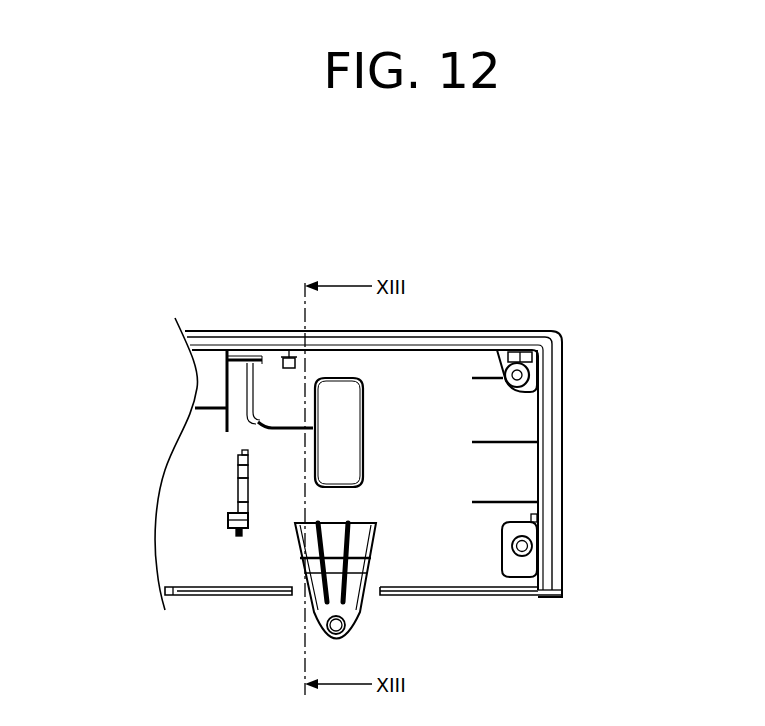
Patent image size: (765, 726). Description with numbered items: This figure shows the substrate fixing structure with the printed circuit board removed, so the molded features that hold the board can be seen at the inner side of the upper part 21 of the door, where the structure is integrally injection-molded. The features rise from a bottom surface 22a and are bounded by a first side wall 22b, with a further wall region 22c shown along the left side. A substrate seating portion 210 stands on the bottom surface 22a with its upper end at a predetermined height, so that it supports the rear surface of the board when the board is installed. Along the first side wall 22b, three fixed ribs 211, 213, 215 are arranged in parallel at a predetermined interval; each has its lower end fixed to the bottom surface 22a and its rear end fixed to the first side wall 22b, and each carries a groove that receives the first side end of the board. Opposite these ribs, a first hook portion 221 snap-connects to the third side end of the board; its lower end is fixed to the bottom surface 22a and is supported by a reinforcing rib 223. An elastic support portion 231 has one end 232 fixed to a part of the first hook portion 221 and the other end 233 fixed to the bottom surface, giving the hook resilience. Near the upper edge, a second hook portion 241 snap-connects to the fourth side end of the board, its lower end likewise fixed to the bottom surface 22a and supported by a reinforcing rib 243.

The upper part 21 is at (562, 357).
The bottom surface 22a is at (458, 557).
The first side wall 22b is at (538, 474).
The bracket 22c is at (224, 374).
The substrate seating portion 210 is at (252, 392).
The fixed rib 211 is at (484, 377).
The fixed rib 213 is at (510, 440).
The fixed rib 215 is at (512, 500).
The first hook portion 221 is at (228, 518).
The reinforcing rib 223 is at (238, 536).
The elastic support portion 231 is at (240, 484).
The one end 232 is at (240, 503).
The other end 233 is at (244, 454).
The second hook portion 241 is at (270, 362).
The reinforcing rib 243 is at (288, 360).